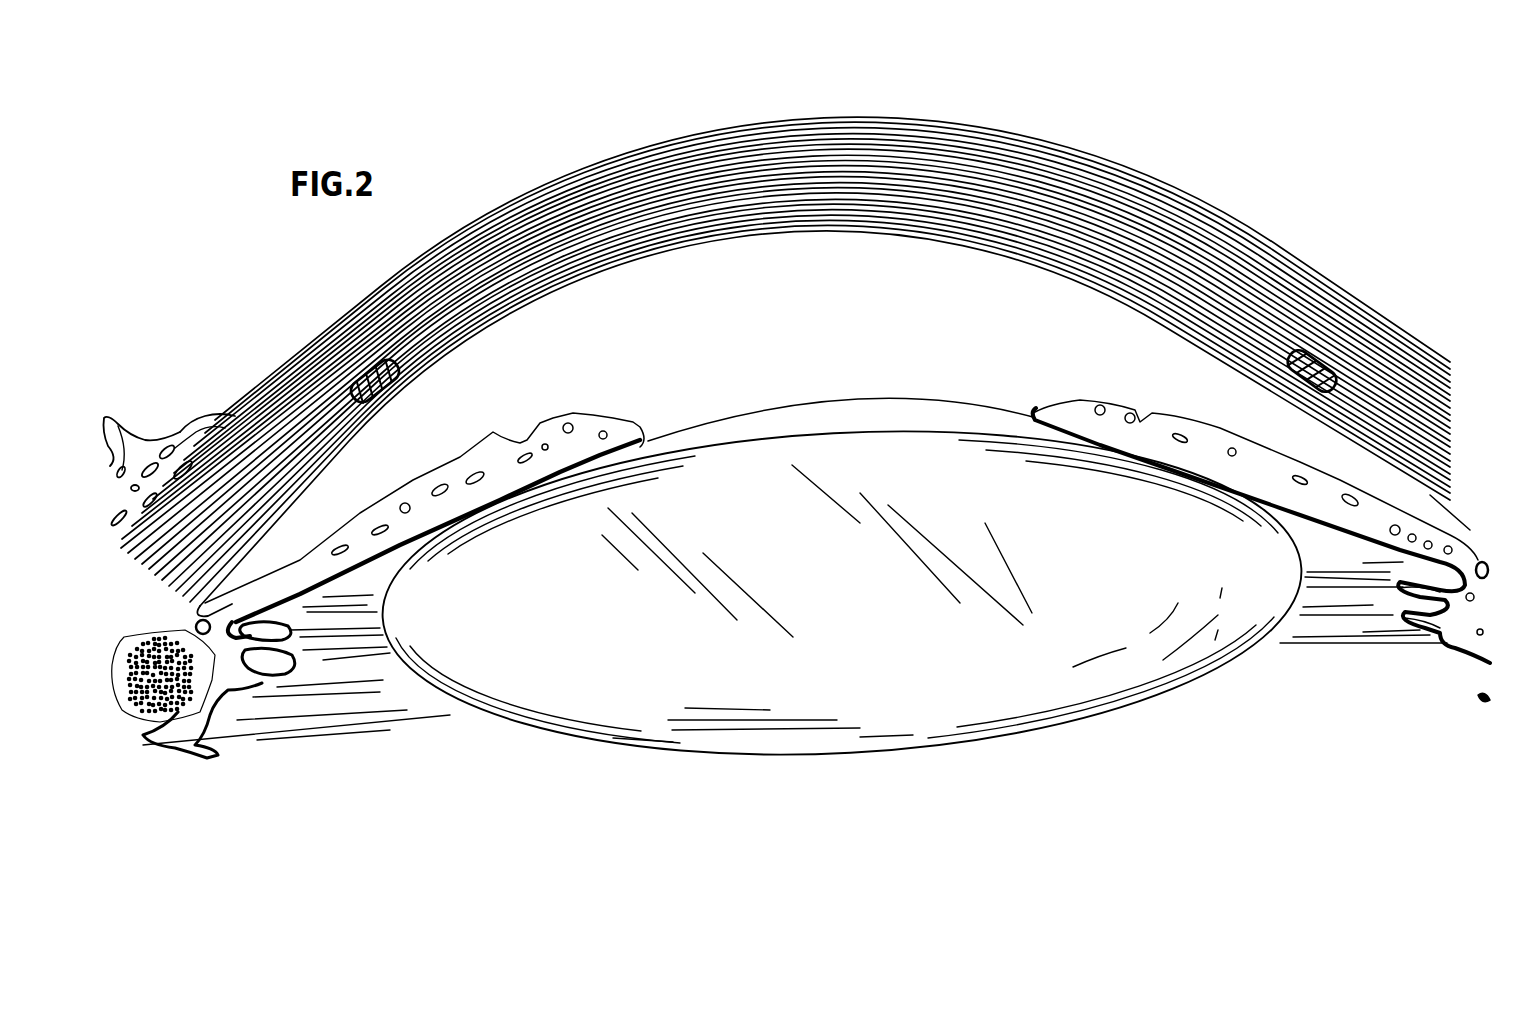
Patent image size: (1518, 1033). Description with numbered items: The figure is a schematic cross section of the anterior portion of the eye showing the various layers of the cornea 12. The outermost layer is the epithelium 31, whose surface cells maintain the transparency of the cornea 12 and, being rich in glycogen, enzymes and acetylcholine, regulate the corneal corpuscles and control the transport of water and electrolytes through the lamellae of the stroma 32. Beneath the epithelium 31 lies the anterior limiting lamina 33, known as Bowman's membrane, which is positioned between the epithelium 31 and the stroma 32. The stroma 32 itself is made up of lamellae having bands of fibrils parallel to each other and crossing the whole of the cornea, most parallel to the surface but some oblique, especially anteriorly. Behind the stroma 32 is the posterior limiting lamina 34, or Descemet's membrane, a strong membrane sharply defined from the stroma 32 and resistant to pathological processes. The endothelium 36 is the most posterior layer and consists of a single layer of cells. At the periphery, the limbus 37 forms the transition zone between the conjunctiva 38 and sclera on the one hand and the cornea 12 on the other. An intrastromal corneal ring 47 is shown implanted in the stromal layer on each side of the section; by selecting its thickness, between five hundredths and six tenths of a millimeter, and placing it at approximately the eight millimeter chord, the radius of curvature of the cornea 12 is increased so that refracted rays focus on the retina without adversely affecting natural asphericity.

The cornea 12 is at (1252, 220).
The epithelium 31 is at (727, 128).
The stroma 32 is at (903, 155).
The anterior limiting lamina 33 is at (845, 122).
The posterior limiting lamina 34 is at (814, 222).
The endothelium 36 is at (952, 244).
The limbus 37 is at (205, 413).
The conjunctiva 38 is at (140, 427).
The intrastromal corneal ring 47 is at (367, 378).